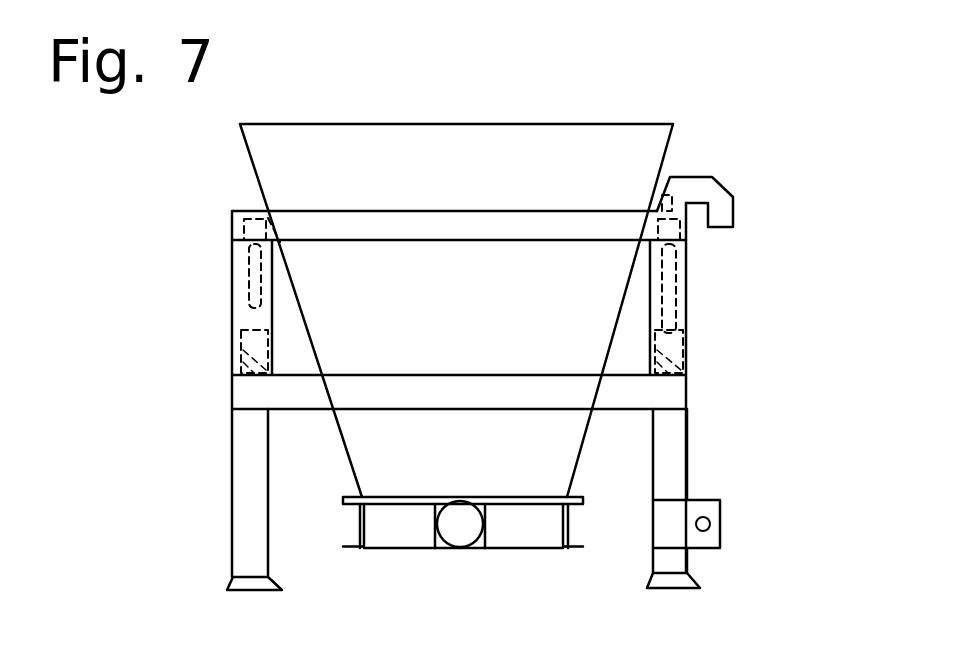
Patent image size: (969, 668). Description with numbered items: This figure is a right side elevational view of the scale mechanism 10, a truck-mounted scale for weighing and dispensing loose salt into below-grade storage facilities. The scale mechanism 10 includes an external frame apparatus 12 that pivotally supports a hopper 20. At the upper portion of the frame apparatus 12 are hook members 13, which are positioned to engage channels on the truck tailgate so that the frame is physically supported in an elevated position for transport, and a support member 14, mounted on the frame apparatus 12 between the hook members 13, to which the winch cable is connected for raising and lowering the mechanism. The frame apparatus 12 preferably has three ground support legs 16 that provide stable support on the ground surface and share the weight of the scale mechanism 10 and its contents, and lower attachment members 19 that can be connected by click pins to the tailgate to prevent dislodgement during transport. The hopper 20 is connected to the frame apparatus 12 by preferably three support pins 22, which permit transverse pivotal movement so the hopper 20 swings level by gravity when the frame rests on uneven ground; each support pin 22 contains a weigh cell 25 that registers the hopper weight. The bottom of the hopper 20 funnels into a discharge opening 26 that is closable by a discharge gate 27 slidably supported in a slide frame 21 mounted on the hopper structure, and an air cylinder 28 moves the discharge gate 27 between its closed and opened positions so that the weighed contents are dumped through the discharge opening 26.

The scale mechanism 10 is at (702, 90).
The frame apparatus 12 is at (233, 222).
The hook members 13 is at (727, 208).
The support member 14 is at (673, 200).
The ground support legs 16 is at (248, 550).
The lower attachment members 19 is at (720, 528).
The hopper 20 is at (495, 149).
The slide frame 21 is at (585, 543).
The support pins 22 is at (248, 322).
The weigh cell 25 is at (247, 293).
The discharge opening 26 is at (478, 570).
The discharge gate 27 is at (404, 507).
The air cylinder 28 is at (450, 533).